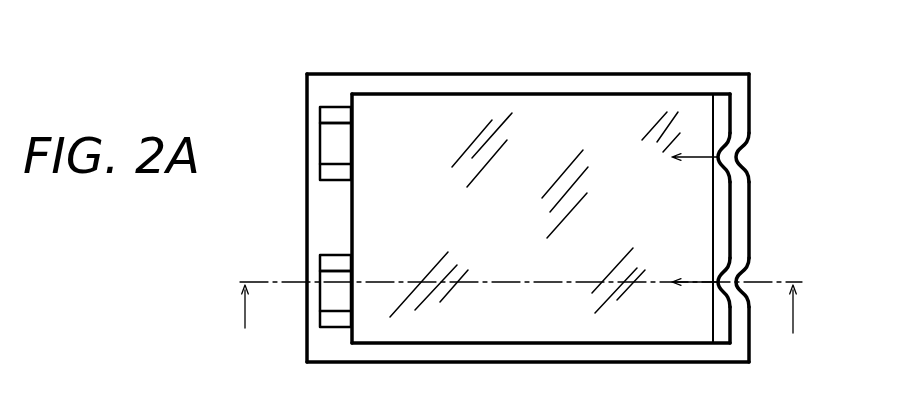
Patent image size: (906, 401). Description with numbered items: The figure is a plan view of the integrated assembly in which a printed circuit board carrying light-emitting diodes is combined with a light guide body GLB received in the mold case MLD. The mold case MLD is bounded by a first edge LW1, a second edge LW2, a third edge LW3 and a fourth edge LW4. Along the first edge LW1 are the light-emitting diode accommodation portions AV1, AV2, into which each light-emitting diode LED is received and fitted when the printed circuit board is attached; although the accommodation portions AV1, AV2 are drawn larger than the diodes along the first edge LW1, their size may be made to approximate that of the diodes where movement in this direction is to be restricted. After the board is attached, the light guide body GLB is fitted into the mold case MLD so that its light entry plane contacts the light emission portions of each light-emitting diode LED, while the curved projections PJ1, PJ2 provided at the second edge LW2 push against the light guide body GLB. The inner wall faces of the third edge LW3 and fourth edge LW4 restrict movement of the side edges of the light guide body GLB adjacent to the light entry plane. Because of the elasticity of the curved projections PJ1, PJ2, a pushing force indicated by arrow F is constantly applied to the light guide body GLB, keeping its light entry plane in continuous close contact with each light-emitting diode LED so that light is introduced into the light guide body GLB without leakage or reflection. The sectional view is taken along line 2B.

The mold case MLD is at (355, 72).
The first edge LW1 is at (288, 204).
The second edge LW2 is at (774, 218).
The third edge LW3 is at (480, 46).
The fourth edge LW4 is at (608, 377).
The light guide body GLB is at (588, 110).
The light-emitting diode LED is at (293, 225).
The light-emitting diode accommodation portion AV1 is at (330, 113).
The light-emitting diode accommodation portion AV2 is at (322, 262).
The curved projection PJ1 is at (744, 156).
The curved projection PJ2 is at (744, 283).
The pushing/pressing force F is at (682, 220).
The section line 2B— 2B is at (515, 320).